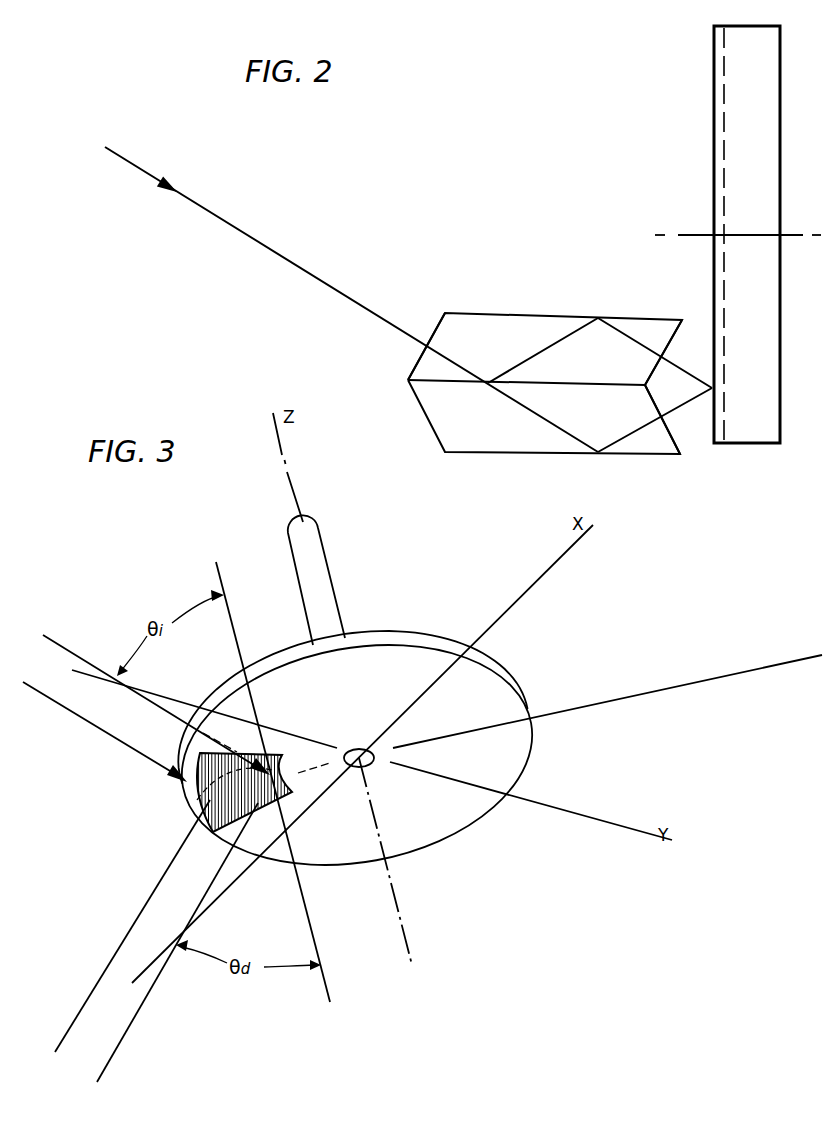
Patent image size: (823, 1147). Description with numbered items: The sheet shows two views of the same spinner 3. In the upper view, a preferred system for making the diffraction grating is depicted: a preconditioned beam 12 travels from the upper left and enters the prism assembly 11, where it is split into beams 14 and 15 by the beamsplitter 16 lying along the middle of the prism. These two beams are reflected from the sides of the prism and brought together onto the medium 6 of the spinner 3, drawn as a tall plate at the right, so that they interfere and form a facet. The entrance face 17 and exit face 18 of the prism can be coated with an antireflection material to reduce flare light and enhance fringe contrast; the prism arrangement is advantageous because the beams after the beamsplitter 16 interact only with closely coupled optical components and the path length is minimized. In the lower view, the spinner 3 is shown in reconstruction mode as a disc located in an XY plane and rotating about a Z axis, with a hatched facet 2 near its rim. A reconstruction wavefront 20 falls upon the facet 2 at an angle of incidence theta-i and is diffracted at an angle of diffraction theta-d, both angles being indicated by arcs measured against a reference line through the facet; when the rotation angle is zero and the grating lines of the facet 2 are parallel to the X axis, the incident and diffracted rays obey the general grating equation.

In FIG. 3, the facet 2 is at (187, 793).
In FIG. 2, the spinner 3 is at (714, 89).
In FIG. 3, the spinner 3 is at (442, 820).
In FIG. 2, the medium 6 is at (714, 196).
In FIG. 2, the prism assembly 11 is at (521, 298).
In FIG. 2, the preconditioned beam 12 is at (305, 268).
In FIG. 2, the beam 14 is at (633, 338).
In FIG. 2, the beam 15 is at (630, 436).
In FIG. 2, the beamsplitter 16 is at (427, 382).
In FIG. 2, the entrance face 17 is at (432, 338).
In FIG. 2, the exit face 18 is at (657, 372).
In FIG. 3, the reconstruction wavefront 20 is at (89, 690).